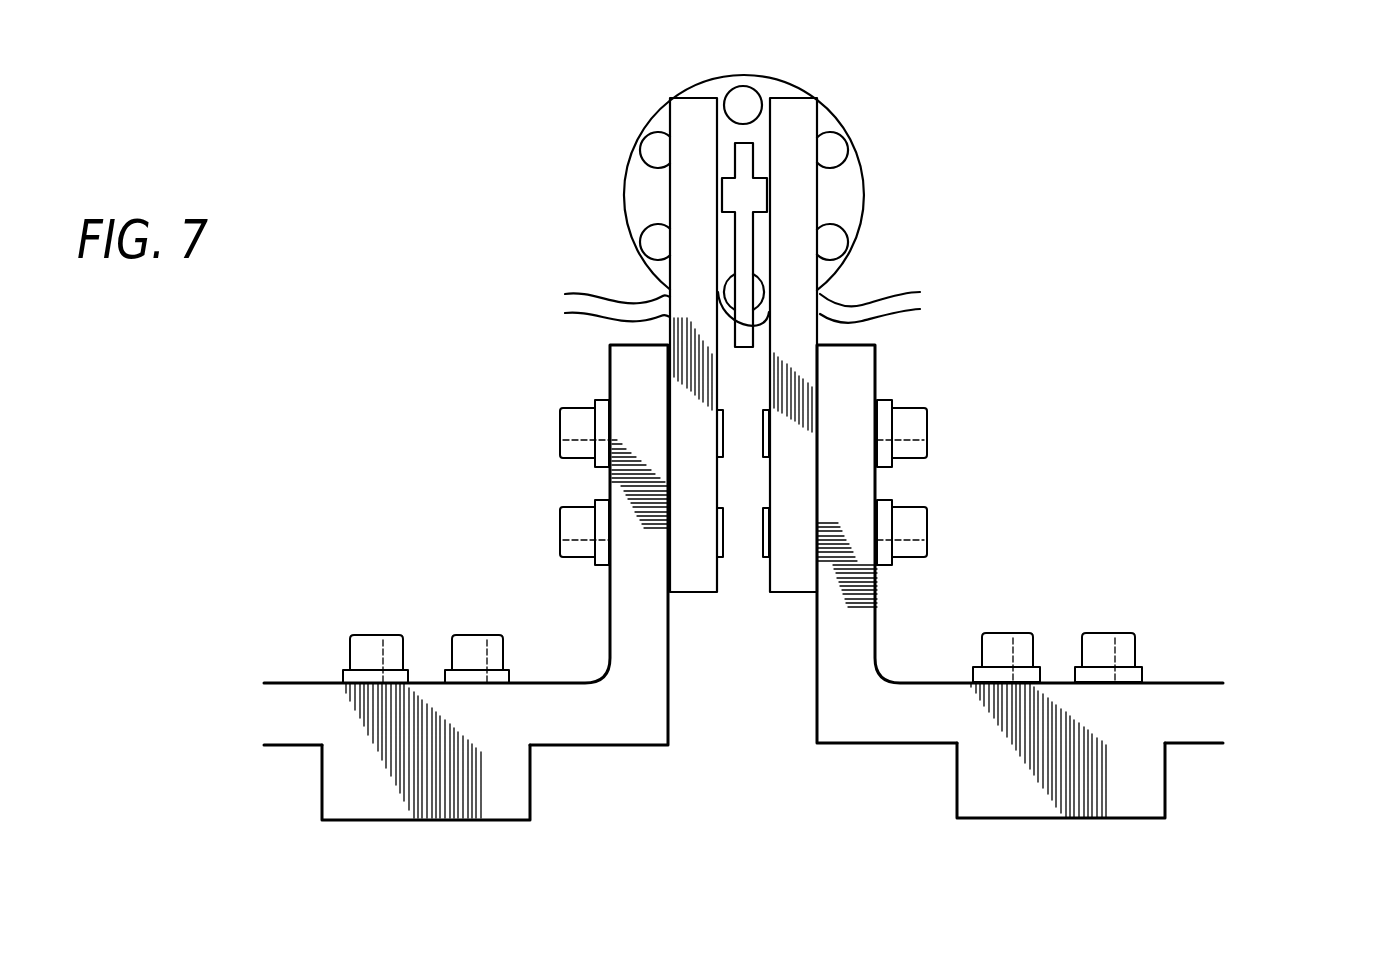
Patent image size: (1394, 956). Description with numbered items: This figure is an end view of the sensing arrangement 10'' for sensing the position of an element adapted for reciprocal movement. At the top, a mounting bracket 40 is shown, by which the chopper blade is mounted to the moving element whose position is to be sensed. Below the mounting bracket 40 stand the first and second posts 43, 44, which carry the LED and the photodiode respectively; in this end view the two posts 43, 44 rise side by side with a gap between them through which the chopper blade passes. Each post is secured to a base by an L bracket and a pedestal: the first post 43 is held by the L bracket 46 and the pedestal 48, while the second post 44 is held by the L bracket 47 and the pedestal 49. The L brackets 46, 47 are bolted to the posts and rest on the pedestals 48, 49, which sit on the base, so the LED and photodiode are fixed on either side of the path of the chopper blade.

The clamp assembly 10'' is at (1296, 100).
The mounting bracket 40 is at (863, 167).
The first post 43 is at (682, 178).
The second post 44 is at (792, 97).
The L bracket 46 is at (288, 718).
The L bracket 47 is at (1173, 713).
The pedestal 48 is at (370, 783).
The pedestal 49 is at (1125, 777).